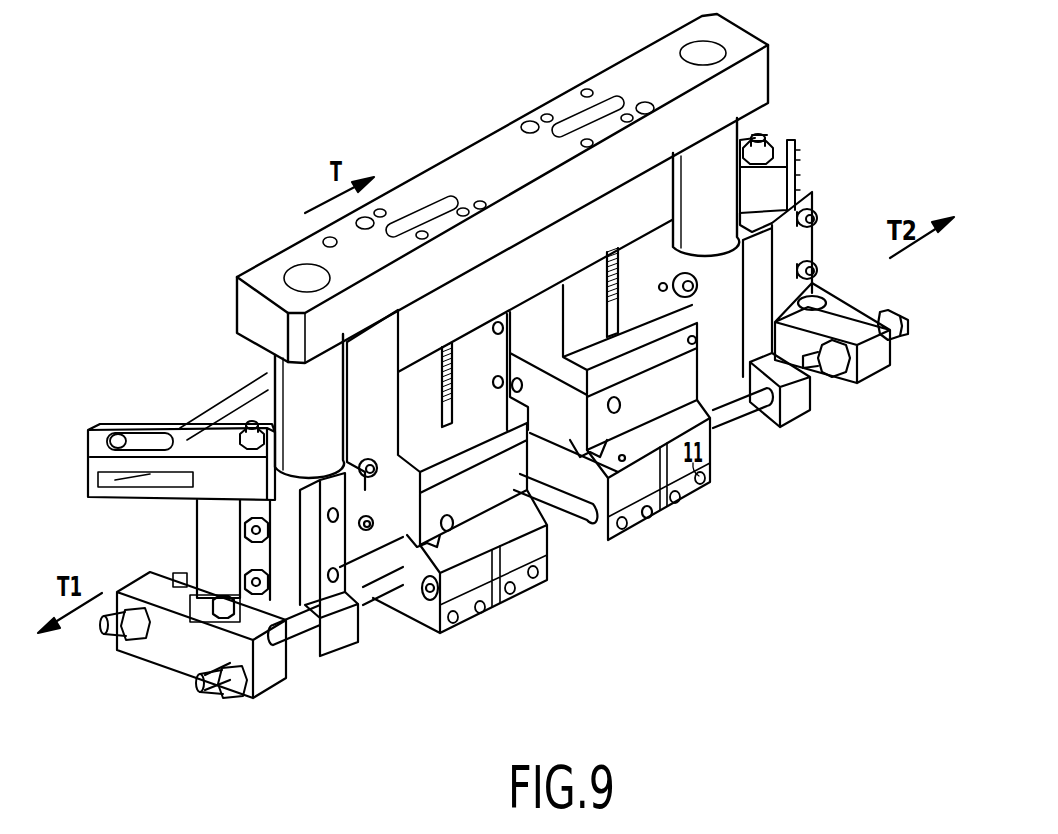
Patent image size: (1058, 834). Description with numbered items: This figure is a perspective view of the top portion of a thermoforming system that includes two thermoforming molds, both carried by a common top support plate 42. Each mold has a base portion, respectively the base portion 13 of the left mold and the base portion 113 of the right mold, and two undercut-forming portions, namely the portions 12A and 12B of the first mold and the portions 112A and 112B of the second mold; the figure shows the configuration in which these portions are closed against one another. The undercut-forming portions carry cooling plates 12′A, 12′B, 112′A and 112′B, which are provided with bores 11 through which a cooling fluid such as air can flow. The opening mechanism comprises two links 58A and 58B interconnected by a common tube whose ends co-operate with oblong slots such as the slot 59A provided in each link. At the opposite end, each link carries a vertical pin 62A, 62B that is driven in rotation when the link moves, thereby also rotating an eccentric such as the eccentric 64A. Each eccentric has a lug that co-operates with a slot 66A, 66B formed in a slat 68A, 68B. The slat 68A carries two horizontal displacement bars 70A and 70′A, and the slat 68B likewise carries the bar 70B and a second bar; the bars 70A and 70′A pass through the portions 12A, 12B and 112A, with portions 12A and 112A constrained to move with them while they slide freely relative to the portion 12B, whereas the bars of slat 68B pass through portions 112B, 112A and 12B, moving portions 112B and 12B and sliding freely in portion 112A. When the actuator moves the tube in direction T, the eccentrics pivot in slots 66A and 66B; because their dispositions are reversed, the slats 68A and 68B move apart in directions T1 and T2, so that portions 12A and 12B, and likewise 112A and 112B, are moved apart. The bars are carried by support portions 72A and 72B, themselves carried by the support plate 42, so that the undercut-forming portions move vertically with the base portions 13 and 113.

The top support plate 42 is at (477, 153).
The base portion 13 is at (669, 410).
The base portion 113 is at (497, 511).
The bores 11 is at (533, 572).
The undercut-forming portion 12A is at (630, 500).
The undercut-forming portion 12B is at (682, 500).
The cooling plate 12′A is at (708, 474).
The cooling plate 12′B is at (614, 543).
The undercut-forming portion 112A is at (508, 612).
The undercut-forming portion 112B is at (515, 593).
The cooling plate 112′A is at (458, 622).
The cooling plate 112′B is at (539, 577).
The link 58A is at (190, 440).
The link 58B is at (745, 137).
The oblong slot 59A is at (133, 433).
The vertical pin 62A is at (247, 425).
The vertical pin 62B is at (772, 150).
The eccentric 64A is at (187, 660).
The slot 66A is at (178, 628).
The slot 66B is at (812, 300).
The slat 68A is at (270, 680).
The slat 68B is at (857, 308).
The horizontal displacement bar 70A is at (373, 607).
The horizontal displacement bar 70B is at (737, 423).
The horizontal displacement bar 70′A is at (187, 573).
The support portion 72A is at (340, 625).
The support portion 72B is at (793, 410).